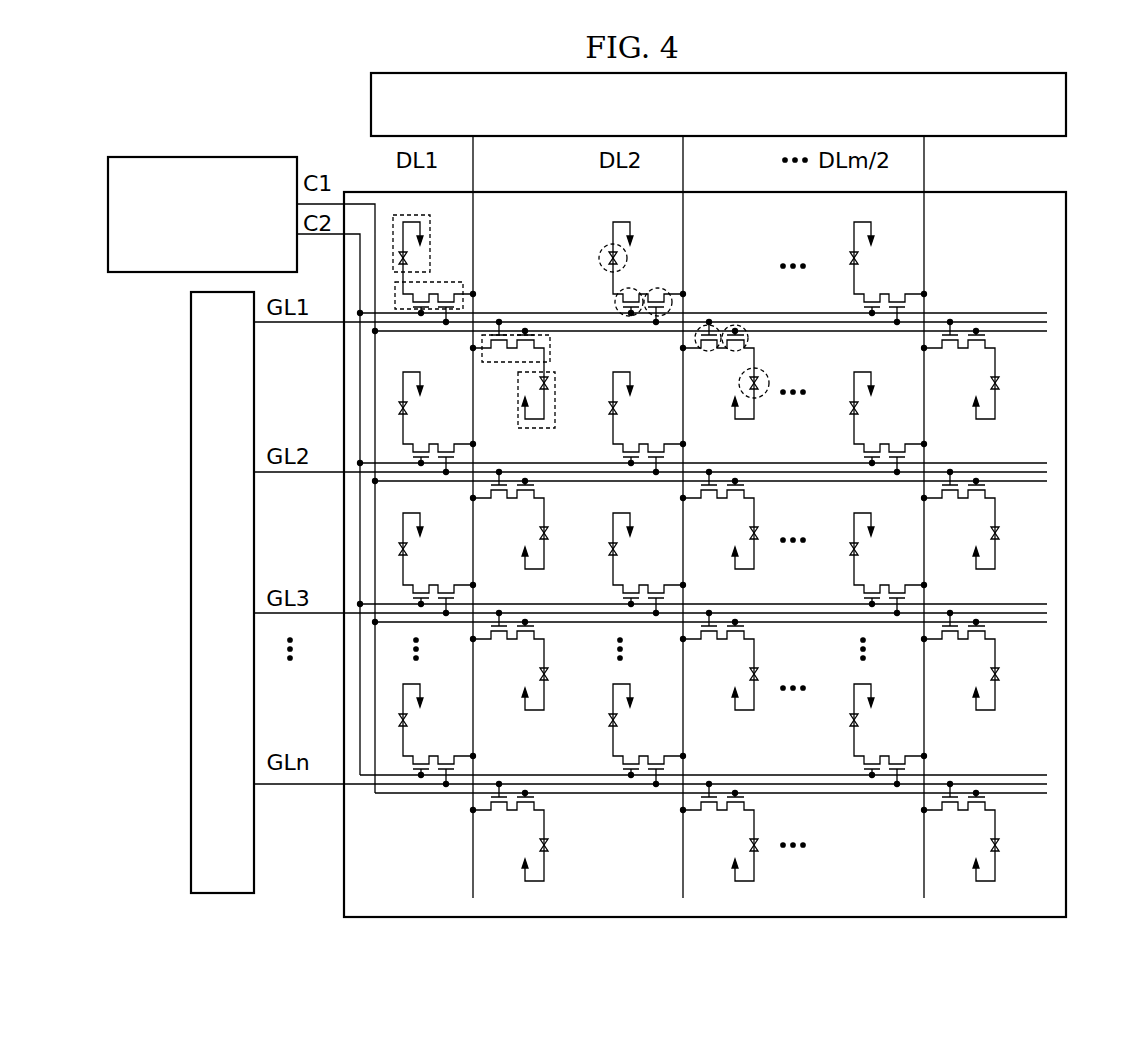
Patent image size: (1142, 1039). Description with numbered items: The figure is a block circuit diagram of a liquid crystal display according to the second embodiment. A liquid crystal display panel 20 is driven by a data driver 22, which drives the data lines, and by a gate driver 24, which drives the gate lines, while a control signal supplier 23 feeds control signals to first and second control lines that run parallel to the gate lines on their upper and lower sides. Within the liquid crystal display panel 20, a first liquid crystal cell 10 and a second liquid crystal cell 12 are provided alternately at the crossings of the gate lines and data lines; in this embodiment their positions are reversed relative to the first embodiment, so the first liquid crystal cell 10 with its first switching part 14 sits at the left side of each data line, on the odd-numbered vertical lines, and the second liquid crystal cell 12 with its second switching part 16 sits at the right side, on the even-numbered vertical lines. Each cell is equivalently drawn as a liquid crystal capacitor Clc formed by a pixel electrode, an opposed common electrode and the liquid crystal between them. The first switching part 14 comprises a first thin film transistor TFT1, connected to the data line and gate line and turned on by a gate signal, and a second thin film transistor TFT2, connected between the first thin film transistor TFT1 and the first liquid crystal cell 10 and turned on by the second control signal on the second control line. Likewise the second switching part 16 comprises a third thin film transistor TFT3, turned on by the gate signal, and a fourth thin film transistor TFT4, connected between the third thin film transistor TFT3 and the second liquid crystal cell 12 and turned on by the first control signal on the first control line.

The first liquid crystal cell 10 is at (430, 226).
The second liquid crystal cell 12 is at (555, 405).
The first switching part 14 is at (440, 282).
The second switching part 16 is at (550, 347).
The liquid crystal display panel 20 is at (1067, 675).
The data driver 22 is at (1066, 108).
The control signal supplier 23 is at (237, 157).
The gate driver 24 is at (191, 332).
The first thin film transistor TFT1 is at (662, 290).
The second thin film transistor TFT2 is at (617, 306).
The third thin film transistor TFT3 is at (714, 350).
The fourth thin film transistor TFT4 is at (751, 339).
The liquid crystal capacitor Clc is at (626, 256).